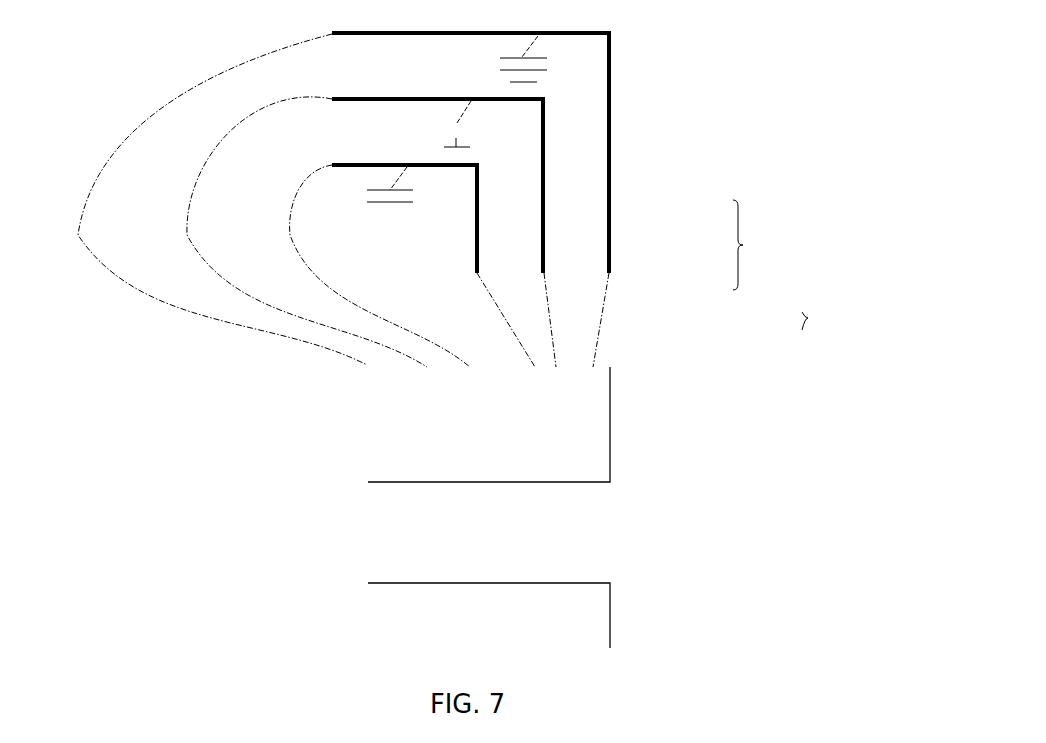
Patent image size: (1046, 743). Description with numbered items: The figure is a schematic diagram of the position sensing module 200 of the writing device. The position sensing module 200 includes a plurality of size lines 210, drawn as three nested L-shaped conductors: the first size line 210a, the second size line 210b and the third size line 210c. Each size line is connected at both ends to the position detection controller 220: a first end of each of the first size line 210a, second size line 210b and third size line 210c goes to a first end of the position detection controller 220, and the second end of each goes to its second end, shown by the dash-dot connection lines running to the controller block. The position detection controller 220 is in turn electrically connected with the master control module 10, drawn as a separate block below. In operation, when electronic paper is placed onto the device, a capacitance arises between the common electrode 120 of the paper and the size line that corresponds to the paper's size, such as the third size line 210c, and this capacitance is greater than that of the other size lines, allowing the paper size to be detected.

The master control module 10 is at (610, 615).
The common electrode 120 is at (513, 82).
The position sensing module 200 is at (827, 321).
The size lines 210 is at (802, 256).
The first size line 210a is at (613, 150).
The second size line 210b is at (545, 199).
The third size line 210c is at (480, 248).
The position detection controller 220 is at (610, 423).